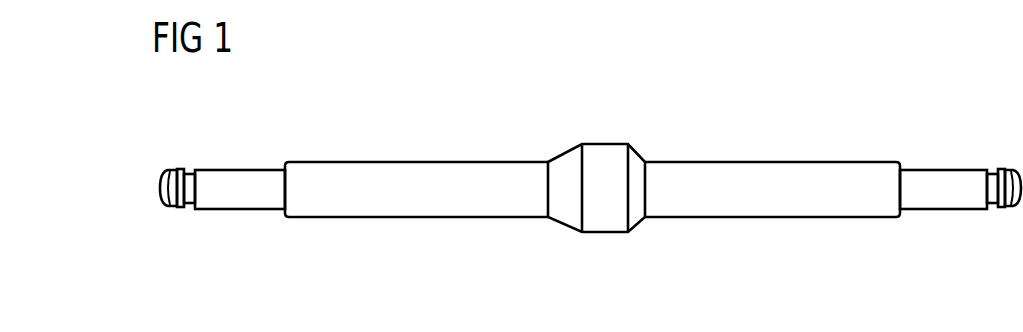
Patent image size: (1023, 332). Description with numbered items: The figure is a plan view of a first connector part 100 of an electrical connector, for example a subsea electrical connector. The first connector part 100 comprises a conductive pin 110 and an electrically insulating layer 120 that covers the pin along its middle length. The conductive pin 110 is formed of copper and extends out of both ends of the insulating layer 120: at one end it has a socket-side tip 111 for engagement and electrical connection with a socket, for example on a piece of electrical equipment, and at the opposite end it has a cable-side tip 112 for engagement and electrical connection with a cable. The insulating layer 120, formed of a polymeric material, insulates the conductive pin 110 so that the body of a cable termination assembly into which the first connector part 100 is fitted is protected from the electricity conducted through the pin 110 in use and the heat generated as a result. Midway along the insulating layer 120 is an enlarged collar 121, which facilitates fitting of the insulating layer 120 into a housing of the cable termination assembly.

The first connector part 100 is at (819, 114).
The conductive pin 110 is at (242, 197).
The socket-side tip 111 is at (170, 206).
The cable-side tip 112 is at (992, 204).
The insulating layer 120 is at (423, 203).
The collar 121 is at (603, 220).